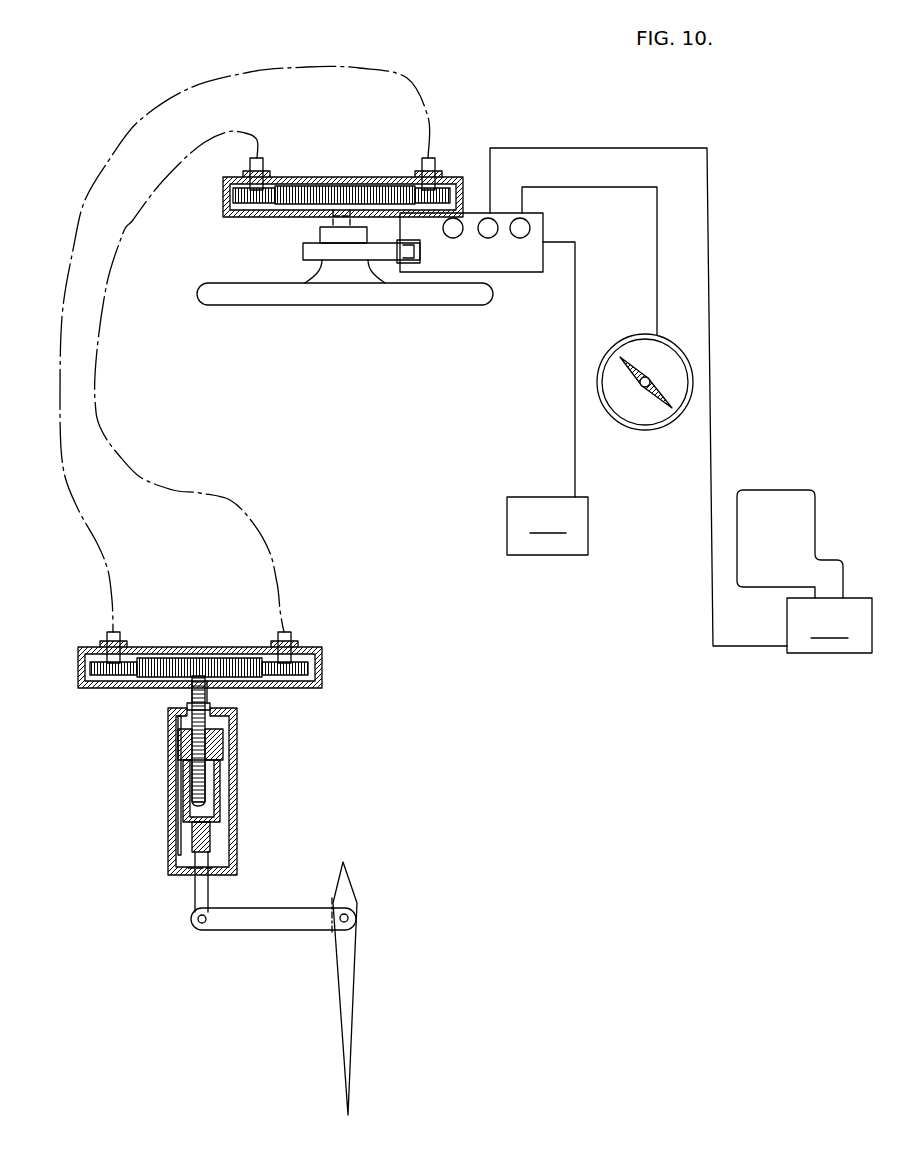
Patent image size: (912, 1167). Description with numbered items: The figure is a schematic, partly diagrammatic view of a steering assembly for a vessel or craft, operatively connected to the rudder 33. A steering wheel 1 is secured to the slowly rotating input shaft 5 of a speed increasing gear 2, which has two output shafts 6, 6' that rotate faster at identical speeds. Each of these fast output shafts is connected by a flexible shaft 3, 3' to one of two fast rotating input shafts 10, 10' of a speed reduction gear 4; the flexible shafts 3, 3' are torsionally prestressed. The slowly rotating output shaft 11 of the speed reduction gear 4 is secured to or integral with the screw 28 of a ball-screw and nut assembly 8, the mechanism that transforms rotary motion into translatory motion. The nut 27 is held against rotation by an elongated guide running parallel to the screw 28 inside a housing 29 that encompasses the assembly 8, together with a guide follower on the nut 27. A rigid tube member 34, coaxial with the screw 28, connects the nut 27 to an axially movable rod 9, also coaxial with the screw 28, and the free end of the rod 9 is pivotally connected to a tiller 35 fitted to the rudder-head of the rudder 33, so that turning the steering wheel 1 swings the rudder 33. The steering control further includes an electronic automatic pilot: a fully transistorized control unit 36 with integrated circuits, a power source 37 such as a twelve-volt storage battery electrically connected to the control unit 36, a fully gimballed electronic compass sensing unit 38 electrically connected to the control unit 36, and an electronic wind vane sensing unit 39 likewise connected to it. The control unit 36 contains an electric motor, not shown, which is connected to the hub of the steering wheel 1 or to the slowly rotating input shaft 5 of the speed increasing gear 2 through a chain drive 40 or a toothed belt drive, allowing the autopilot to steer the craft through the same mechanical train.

The steering wheel 1 is at (335, 293).
The speed increasing gear 2 is at (213, 204).
The flexible shaft 3 is at (234, 332).
The flexible shaft 3' is at (208, 366).
The speed reduction gear 4 is at (334, 669).
The slowly rotating input shaft 5 is at (327, 217).
The output shaft 6 is at (439, 158).
The output shaft 6' is at (272, 160).
The ball-screw and nut assembly 8 is at (248, 768).
The axially movable rod 9 is at (200, 890).
The fast rotating input shaft 10 is at (135, 623).
The fast rotating input shaft 10' is at (308, 625).
The slowly rotating output shaft 11 is at (190, 695).
The nut 27 is at (190, 740).
The screw 28 is at (228, 742).
The housing 29 is at (175, 850).
The rudder 33 is at (348, 1025).
The rigid tube member 34 is at (186, 793).
The tiller 35 is at (278, 915).
The control unit 36 is at (527, 265).
The power source 37 is at (547, 526).
The electronic compass sensing unit 38 is at (658, 417).
The electronic wind vane sensing unit 39 is at (804, 571).
The chain drive 40 is at (370, 253).